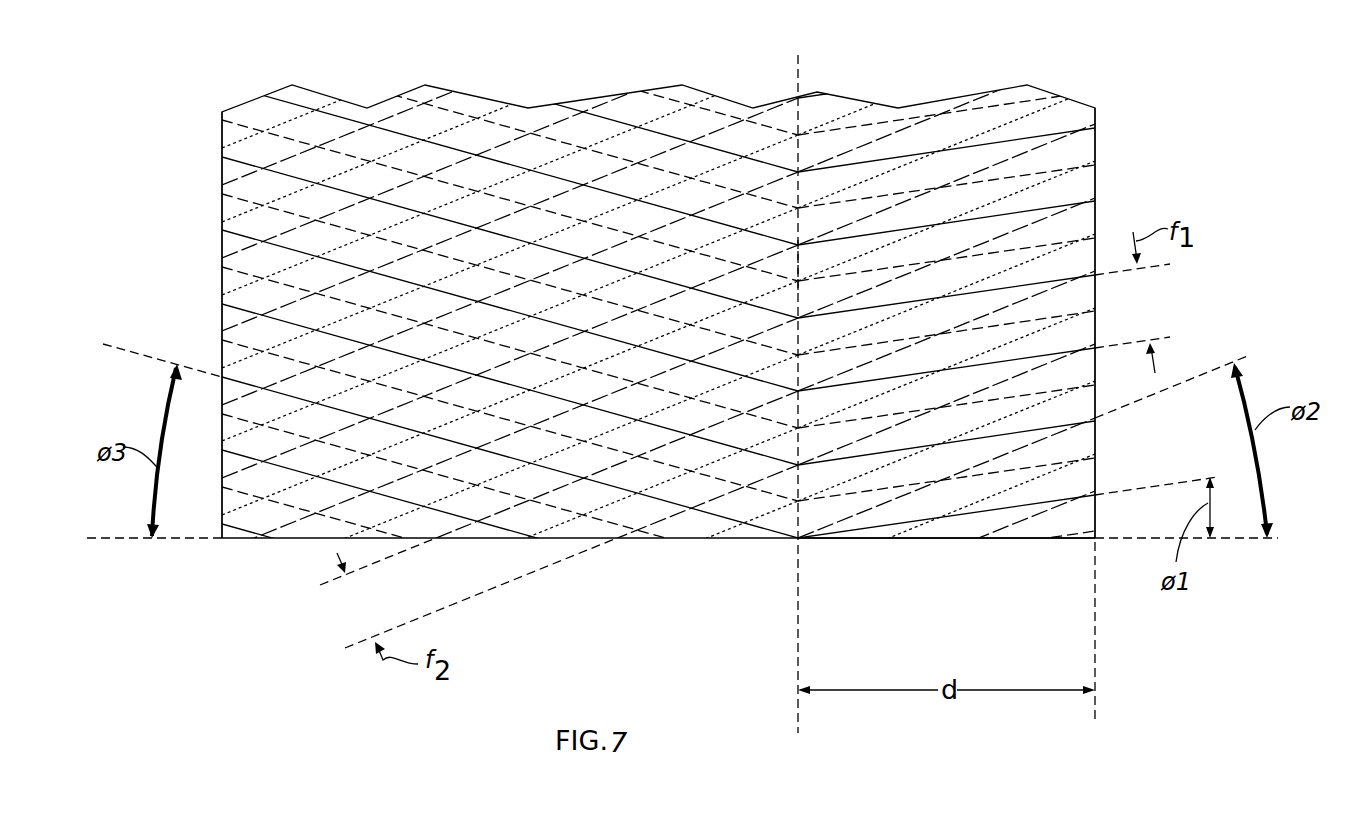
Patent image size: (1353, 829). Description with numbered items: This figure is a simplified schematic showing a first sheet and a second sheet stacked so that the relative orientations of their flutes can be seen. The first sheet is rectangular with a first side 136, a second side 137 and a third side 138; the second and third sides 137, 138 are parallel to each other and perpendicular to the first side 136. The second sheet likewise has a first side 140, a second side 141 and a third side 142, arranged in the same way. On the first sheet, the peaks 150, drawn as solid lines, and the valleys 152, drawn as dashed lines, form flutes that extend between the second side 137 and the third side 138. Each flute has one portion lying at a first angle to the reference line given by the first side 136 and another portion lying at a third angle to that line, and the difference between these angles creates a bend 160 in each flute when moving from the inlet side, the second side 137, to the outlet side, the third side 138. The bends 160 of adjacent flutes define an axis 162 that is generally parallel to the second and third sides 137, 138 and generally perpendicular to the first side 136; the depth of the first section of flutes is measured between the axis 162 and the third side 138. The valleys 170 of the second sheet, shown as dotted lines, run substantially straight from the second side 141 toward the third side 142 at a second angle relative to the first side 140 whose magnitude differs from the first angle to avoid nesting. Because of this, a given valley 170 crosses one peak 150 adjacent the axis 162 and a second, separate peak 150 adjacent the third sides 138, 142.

The first side 136 is at (1038, 540).
The second side 137 is at (222, 177).
The third side 138 is at (1095, 172).
The first side 140 is at (967, 540).
The second side 141 is at (222, 247).
The third side 142 is at (1095, 203).
The peaks 150 is at (490, 305).
The valleys 152 is at (405, 245).
The bend 160 is at (812, 260).
The axis 162 is at (798, 632).
The valleys 170 is at (1047, 148).